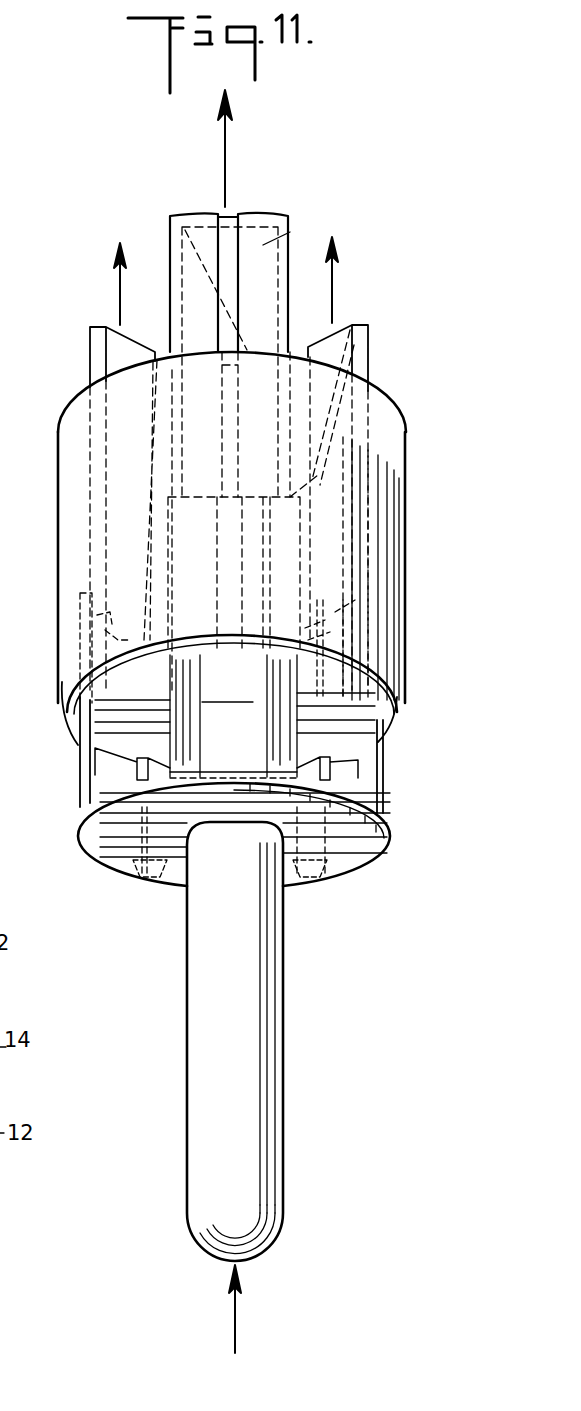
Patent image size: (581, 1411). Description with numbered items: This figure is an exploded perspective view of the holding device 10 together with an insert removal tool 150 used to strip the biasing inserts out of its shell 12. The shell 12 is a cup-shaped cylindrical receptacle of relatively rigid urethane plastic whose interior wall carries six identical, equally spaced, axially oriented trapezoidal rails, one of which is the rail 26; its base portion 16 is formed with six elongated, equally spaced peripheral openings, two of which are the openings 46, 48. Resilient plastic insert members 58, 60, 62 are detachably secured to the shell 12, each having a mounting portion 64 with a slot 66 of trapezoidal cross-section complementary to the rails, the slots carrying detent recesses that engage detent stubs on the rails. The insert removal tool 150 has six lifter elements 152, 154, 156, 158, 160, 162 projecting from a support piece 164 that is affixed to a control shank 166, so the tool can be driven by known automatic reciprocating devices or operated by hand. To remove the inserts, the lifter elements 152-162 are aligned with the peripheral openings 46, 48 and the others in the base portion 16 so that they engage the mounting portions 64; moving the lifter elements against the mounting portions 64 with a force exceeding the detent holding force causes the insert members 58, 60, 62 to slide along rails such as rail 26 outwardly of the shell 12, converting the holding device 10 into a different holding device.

The holding device 10 is at (405, 397).
The shell 12 is at (408, 468).
The base portion 16 is at (400, 718).
The rail 26 is at (247, 441).
The peripheral opening 46 is at (310, 630).
The peripheral opening 48 is at (97, 617).
The insert member 58 is at (92, 325).
The insert member 60 is at (362, 318).
The insert member 62 is at (285, 211).
The mounting portion 64 is at (263, 245).
The slot 66 is at (228, 212).
The insert removal tool 150 is at (303, 1045).
The lifter element 152 is at (310, 897).
The lifter element 154 is at (377, 777).
The lifter element 156 is at (277, 738).
The lifter element 158 is at (187, 692).
The lifter element 160 is at (80, 768).
The lifter element 162 is at (147, 880).
The support piece 164 is at (357, 868).
The control shank 166 is at (285, 1140).